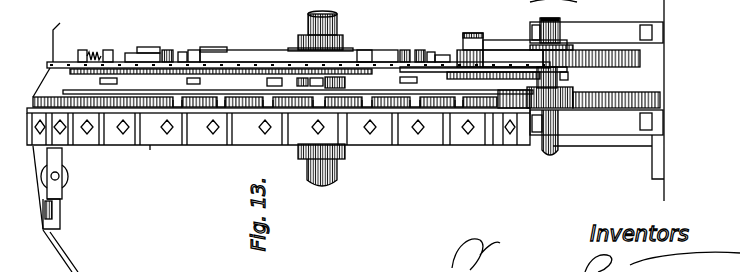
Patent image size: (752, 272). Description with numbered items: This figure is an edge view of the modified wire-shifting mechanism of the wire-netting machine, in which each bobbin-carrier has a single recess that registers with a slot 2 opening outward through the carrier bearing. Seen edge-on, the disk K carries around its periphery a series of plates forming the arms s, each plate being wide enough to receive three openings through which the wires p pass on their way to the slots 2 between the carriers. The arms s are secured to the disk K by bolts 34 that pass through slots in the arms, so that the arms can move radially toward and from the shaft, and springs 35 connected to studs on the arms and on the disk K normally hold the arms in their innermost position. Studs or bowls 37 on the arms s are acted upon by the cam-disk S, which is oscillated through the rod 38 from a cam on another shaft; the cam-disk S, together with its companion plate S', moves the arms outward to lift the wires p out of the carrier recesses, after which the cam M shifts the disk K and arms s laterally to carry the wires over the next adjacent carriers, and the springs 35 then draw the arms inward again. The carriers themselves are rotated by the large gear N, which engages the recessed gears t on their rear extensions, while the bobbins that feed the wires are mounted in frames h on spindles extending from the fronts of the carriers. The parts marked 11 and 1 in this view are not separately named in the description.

The wires p is at (59, 37).
The arms s is at (50, 63).
The gears t is at (33, 97).
The disk K is at (132, 66).
The cam-disk S is at (261, 44).
The slide block plate S' is at (327, 39).
The studs or bowls 37 is at (147, 47).
The springs 35 is at (170, 50).
The bolts 34 is at (184, 50).
The gear N is at (310, 18).
The rod 38 is at (493, 40).
The roller drum 11 is at (528, 50).
The cam M is at (613, 92).
The slots 2 is at (135, 145).
The carrier post 1 is at (153, 146).
The frames h is at (62, 156).